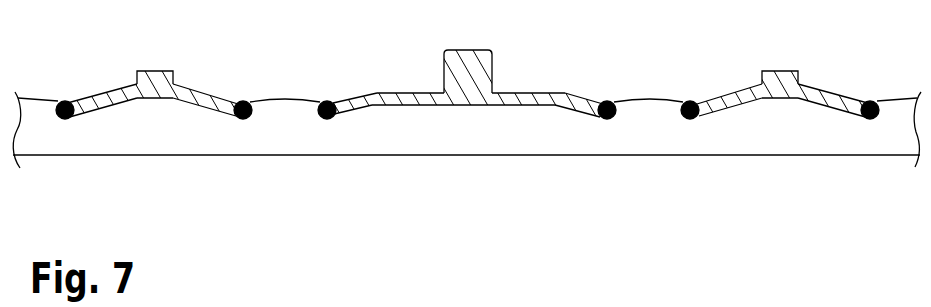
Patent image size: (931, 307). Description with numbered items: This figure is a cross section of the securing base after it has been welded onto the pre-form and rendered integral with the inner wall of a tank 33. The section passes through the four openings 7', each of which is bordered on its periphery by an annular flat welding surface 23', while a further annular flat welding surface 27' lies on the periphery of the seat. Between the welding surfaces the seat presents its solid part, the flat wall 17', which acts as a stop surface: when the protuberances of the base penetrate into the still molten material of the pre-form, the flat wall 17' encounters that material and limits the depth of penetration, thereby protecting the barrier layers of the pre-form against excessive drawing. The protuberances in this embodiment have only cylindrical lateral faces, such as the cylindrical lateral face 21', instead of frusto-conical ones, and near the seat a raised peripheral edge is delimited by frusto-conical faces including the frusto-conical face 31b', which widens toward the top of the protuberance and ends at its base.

The opening 7' is at (467, 93).
The solid part of the seat 17' is at (465, 132).
The cylindrical lateral face 21' is at (467, 159).
The annular flat welding surface 23' is at (466, 155).
The annular flat welding surface 27' is at (468, 153).
The frusto-conical face of the raised peripheral edge 31b' is at (467, 159).
The tank 33 is at (472, 133).